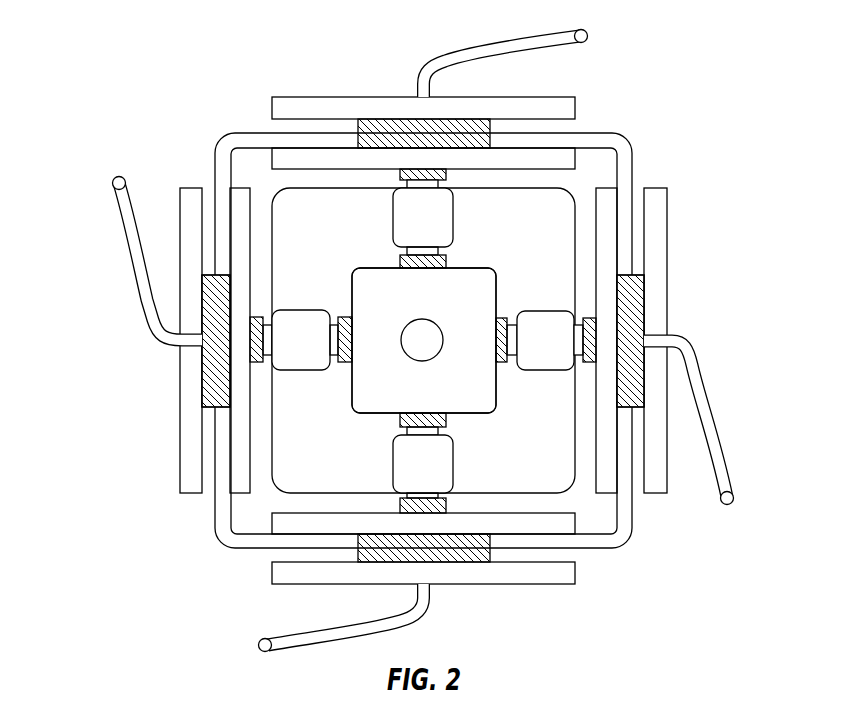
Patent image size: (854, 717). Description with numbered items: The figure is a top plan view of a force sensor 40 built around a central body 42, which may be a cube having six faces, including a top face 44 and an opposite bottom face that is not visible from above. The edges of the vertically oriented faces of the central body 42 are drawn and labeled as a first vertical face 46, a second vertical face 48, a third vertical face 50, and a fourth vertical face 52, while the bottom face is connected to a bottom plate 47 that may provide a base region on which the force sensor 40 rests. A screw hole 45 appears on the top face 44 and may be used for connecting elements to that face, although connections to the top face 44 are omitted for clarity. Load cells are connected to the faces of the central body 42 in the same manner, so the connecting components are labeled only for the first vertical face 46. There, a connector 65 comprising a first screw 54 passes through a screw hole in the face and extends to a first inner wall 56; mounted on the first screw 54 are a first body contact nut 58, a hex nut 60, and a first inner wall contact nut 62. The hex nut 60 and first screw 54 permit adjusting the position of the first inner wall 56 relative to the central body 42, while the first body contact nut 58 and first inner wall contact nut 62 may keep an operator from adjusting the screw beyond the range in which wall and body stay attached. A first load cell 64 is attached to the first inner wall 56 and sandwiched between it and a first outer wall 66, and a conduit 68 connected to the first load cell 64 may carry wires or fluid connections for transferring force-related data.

The force sensor 40 is at (674, 62).
The central body 42 is at (424, 340).
The top face 44 is at (433, 404).
The screw hole 45 is at (428, 318).
The first vertical face 46 is at (497, 282).
The bottom plate 47 is at (552, 484).
The second vertical face 48 is at (376, 267).
The third vertical face 50 is at (350, 393).
The fourth vertical face 52 is at (382, 417).
The first screw 54 is at (515, 314).
The first inner wall 56 is at (595, 442).
The first body contact nut 58 is at (503, 364).
The hex nut 60 is at (545, 373).
The first inner wall contact nut 62 is at (596, 328).
The first load cell 64 is at (638, 286).
The connector 65 is at (533, 431).
The first outer wall 66 is at (667, 235).
The conduit 68 is at (722, 437).